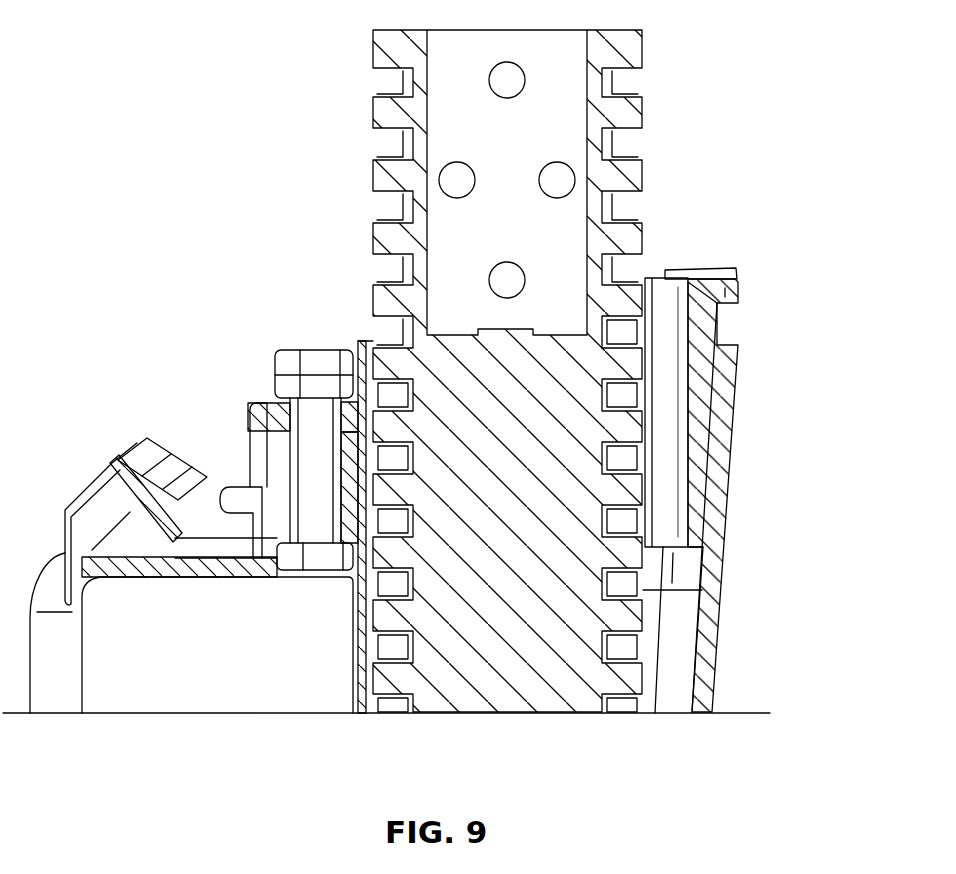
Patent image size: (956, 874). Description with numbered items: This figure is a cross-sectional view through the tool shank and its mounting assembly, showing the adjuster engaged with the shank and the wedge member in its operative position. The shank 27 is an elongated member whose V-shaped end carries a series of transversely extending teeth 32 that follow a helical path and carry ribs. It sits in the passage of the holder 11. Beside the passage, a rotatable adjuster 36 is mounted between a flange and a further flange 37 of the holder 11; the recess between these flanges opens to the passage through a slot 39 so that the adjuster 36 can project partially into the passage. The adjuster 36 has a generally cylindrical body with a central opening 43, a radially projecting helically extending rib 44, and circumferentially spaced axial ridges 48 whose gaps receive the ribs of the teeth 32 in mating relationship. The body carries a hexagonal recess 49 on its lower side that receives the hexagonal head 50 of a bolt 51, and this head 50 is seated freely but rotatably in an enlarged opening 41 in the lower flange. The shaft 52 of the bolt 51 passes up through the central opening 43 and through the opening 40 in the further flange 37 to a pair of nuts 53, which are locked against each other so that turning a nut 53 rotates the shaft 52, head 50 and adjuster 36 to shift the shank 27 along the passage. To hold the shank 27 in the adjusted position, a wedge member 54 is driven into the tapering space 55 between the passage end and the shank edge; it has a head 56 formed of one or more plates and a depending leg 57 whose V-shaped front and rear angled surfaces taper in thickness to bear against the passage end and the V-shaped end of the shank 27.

The shank 27 is at (668, 103).
The teeth 32 is at (367, 113).
The bolt 51 is at (315, 328).
The nuts 53 is at (278, 370).
The further flange 37 is at (273, 405).
The opening 40 is at (297, 463).
The shaft 52 is at (250, 465).
The ridges 48 is at (237, 470).
The adjuster 36 is at (148, 446).
The helically extending rib 44 is at (110, 466).
The central opening 43 is at (273, 560).
The hexagonal recess 49 is at (267, 562).
The enlarged opening 41 is at (277, 580).
The hexagonal head 50 is at (307, 577).
The slot 39 is at (363, 560).
The head 56 is at (732, 273).
The wedge member 54 is at (735, 315).
The depending leg 57 is at (712, 333).
The tapering space 55 is at (715, 432).
The holder 11 is at (718, 602).